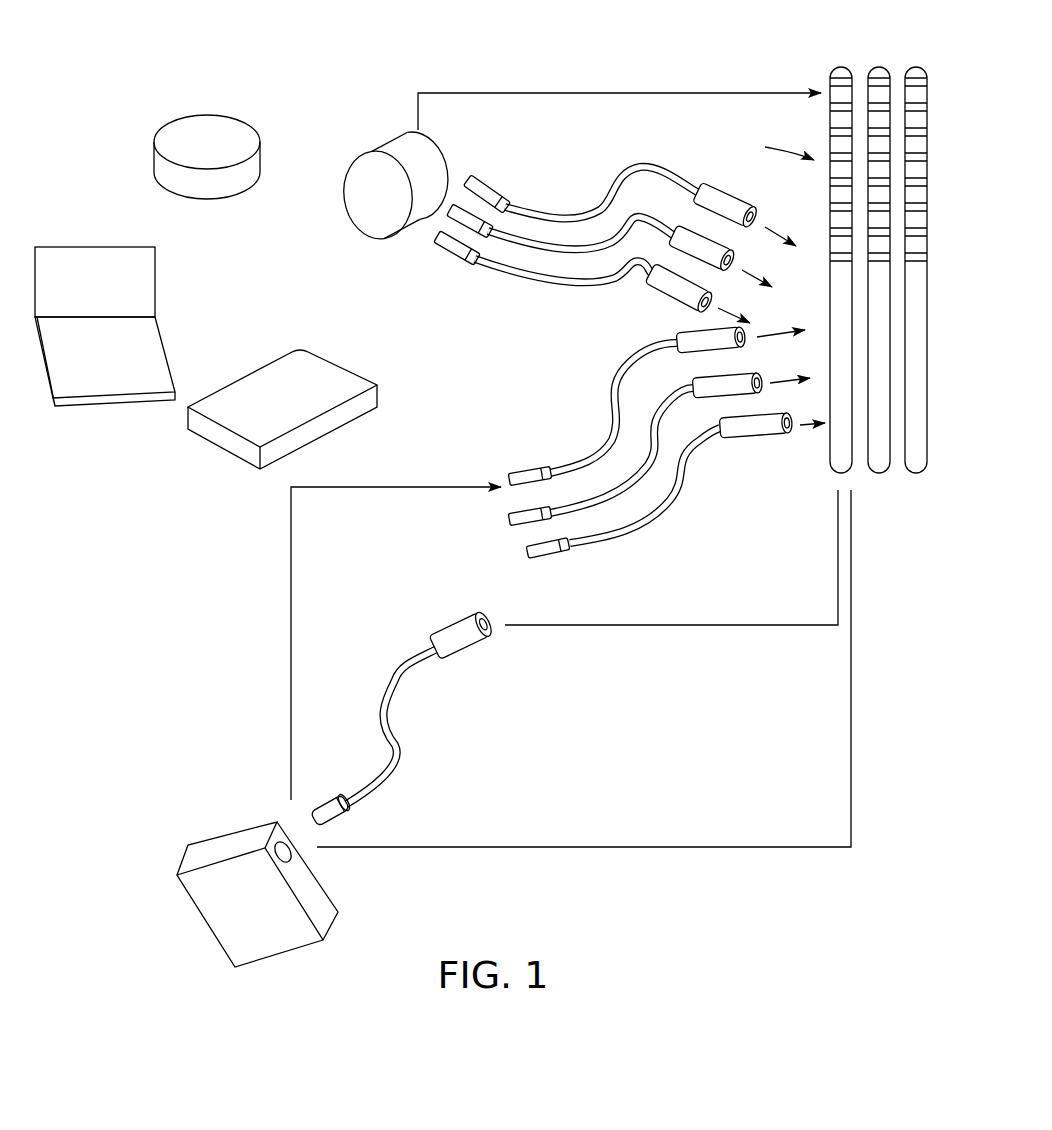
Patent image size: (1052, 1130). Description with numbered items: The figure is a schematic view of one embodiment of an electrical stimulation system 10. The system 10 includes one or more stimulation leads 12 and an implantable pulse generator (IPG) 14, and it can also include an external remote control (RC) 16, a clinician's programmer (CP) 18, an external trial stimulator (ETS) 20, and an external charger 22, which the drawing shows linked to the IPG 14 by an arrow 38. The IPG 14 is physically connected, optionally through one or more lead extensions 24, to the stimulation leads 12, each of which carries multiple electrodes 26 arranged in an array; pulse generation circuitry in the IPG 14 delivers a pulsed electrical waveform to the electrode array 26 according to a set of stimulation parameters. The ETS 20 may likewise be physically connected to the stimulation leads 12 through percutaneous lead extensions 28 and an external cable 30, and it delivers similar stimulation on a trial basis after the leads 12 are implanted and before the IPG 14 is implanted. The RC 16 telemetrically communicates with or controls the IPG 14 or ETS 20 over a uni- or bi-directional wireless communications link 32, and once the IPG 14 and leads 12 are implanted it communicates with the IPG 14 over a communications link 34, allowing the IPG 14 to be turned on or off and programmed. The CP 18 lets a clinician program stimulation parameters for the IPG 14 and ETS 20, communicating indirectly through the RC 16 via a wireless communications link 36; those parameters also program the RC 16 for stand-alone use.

The electrical stimulation system 10 is at (581, 42).
The stimulation leads 12 is at (918, 65).
The implantable pulse generator (IPG) 14 is at (376, 150).
The external remote control (RC) 16 is at (295, 365).
The clinician's programmer (CP) 18 is at (80, 260).
The external trial stimulator (ETS) 20 is at (228, 848).
The external charger 22 is at (205, 120).
The lead extensions 24 is at (635, 262).
The electrodes 26 is at (837, 103).
The percutaneous lead extensions 28 is at (607, 493).
The external cable 30 is at (398, 662).
The wireless communications link 32 is at (232, 486).
The communications link 34 is at (354, 337).
The wireless communications link 36 is at (118, 421).
The link charger to IPG 38 is at (329, 219).